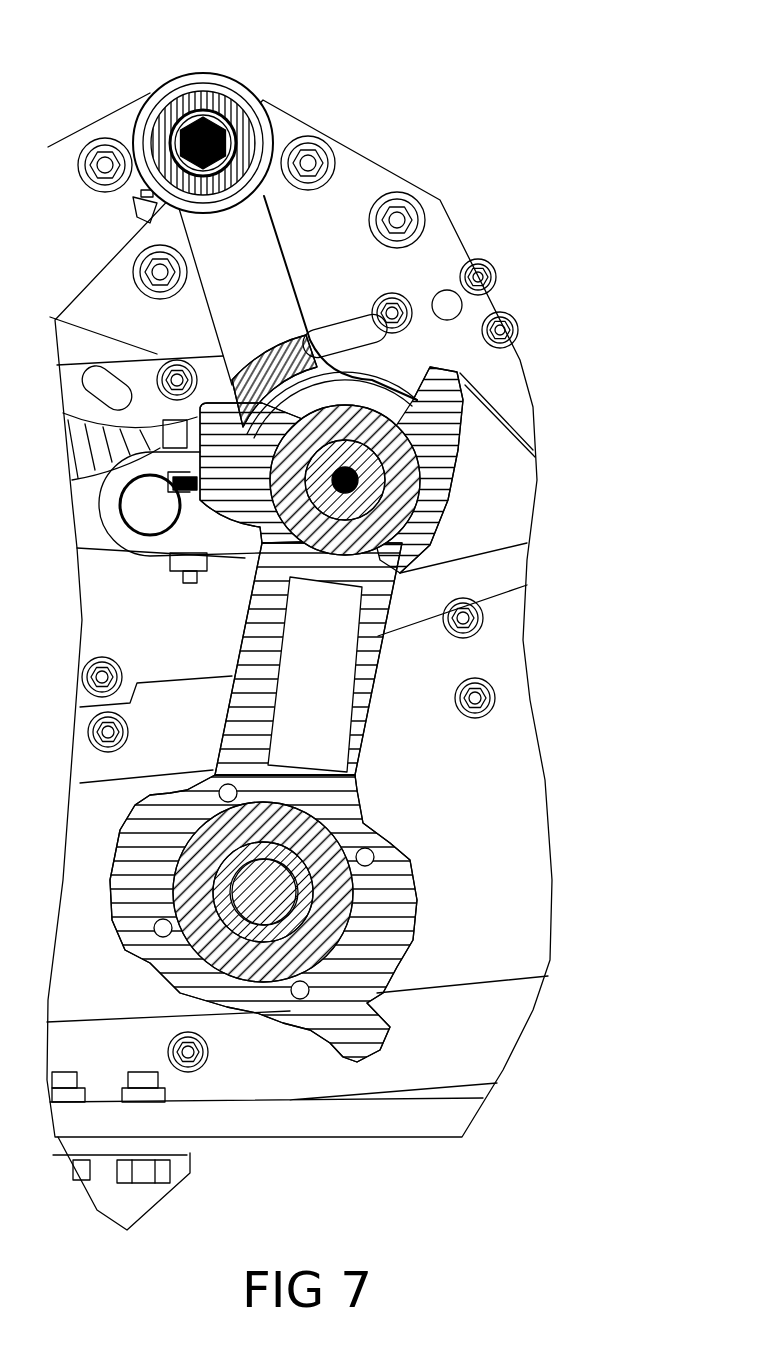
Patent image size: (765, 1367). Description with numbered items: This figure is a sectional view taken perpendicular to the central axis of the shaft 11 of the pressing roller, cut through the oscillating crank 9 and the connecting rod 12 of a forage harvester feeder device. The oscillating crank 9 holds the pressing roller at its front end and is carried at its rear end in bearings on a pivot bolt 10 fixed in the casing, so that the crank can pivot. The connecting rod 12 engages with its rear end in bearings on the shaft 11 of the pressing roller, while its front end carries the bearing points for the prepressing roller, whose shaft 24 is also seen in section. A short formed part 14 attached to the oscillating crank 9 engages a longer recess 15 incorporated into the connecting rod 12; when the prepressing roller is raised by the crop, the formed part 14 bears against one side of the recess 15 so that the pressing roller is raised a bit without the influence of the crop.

The pivot bolt 10 is at (232, 138).
The oscillating crank 9 is at (237, 280).
The formed part 14 is at (273, 372).
The recess 15 is at (432, 372).
The shaft 11 is at (368, 482).
The connecting rod 12 is at (318, 646).
The shaft 24 is at (305, 890).